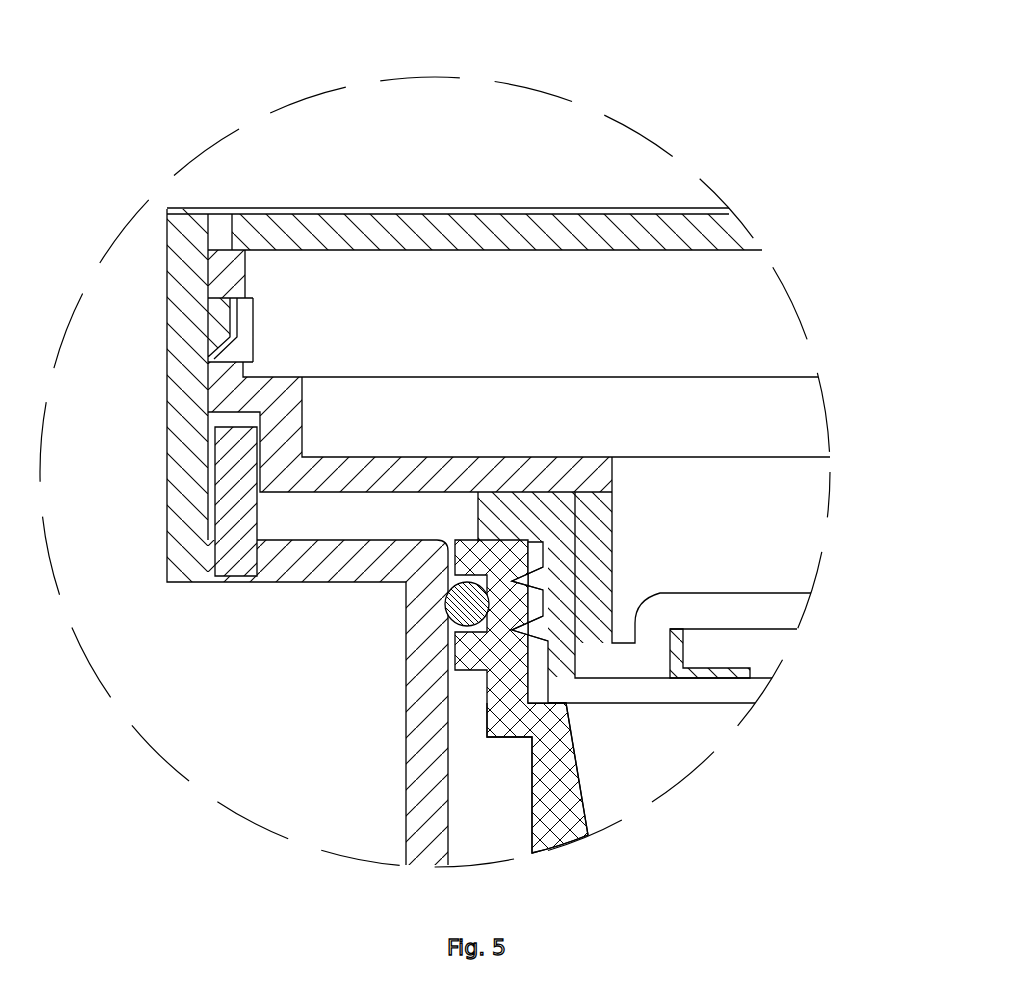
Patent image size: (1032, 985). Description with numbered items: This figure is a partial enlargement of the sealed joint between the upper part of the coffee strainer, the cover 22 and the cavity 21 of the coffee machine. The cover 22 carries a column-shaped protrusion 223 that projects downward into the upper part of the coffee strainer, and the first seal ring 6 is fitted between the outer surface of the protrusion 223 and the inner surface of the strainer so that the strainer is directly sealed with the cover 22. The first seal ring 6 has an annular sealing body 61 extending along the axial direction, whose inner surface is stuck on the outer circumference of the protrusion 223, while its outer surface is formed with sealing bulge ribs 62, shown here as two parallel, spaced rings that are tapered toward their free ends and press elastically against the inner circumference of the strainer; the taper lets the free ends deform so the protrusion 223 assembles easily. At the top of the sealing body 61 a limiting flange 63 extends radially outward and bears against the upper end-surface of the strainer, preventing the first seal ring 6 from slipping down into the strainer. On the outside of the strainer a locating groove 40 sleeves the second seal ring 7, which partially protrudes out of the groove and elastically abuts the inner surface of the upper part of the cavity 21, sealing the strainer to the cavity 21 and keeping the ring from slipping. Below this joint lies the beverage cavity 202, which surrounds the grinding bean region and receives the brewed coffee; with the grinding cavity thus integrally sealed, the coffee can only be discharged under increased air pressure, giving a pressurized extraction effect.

The cavity 21 is at (424, 778).
The cover 22 is at (290, 392).
The protrusion 223 is at (600, 526).
The locating groove 40 is at (453, 653).
The beverage cavity 202 is at (490, 812).
The second seal ring 7 is at (450, 622).
The first seal ring 6 is at (820, 735).
The sealing body 61 is at (515, 583).
The sealing bulge ribs 62 is at (520, 632).
The limiting flange 63 is at (683, 645).